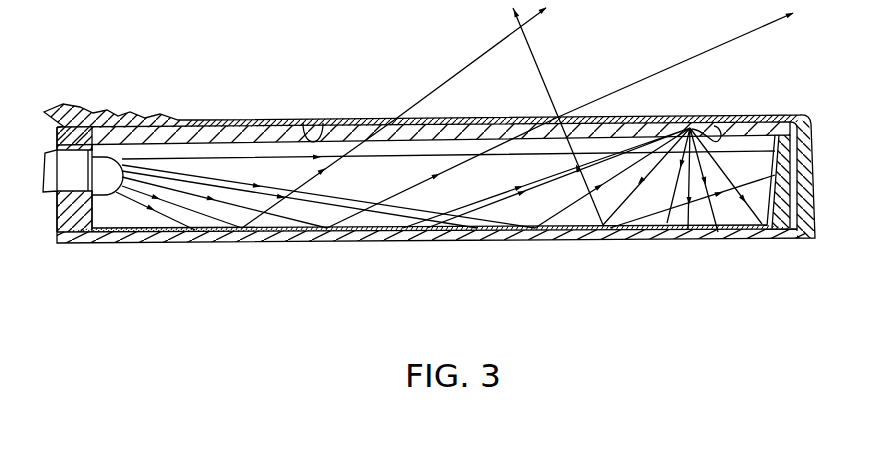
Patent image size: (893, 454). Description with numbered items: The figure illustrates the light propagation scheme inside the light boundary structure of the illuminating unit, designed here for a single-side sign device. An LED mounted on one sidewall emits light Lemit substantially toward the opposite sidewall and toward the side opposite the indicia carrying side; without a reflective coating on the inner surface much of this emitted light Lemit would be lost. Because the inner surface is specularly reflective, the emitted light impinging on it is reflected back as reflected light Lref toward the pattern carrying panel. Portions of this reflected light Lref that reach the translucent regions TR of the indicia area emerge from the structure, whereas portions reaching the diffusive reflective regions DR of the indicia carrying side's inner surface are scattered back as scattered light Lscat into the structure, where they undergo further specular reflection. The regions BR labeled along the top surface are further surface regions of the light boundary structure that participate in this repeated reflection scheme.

The reflection region of light guide surface BR is at (243, 118).
The translucent regions TR is at (353, 118).
The diffuse reflection region of light guide surface DR is at (328, 118).
The emitted light Lemit is at (199, 173).
The reflected light Lref is at (315, 173).
The scattered light Lscat is at (672, 186).